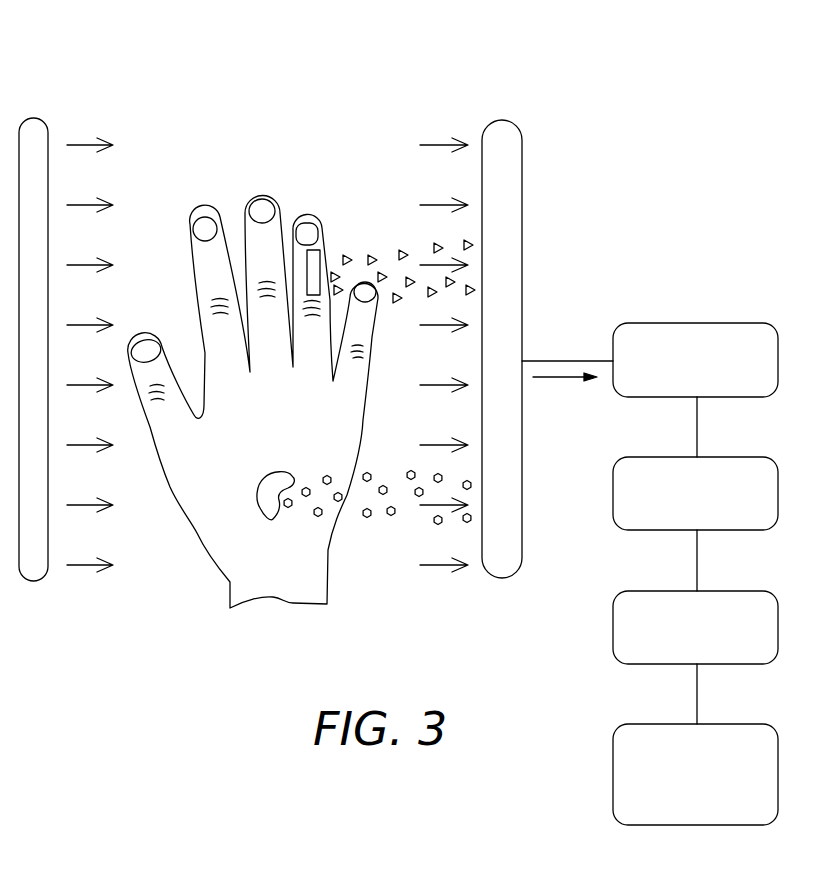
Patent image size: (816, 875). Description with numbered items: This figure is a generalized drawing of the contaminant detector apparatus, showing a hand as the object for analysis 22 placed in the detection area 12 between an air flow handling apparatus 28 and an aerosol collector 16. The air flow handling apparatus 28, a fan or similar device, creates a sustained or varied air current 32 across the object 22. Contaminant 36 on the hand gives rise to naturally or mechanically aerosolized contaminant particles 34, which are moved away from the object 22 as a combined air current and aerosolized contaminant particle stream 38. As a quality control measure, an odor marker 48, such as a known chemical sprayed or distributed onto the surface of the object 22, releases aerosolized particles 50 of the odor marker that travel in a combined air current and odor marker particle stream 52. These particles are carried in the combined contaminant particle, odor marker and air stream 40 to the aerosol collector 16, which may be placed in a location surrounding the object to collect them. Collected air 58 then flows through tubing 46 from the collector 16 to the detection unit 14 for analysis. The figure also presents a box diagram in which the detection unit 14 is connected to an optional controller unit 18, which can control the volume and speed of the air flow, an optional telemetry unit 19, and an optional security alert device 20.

The detection area 12 is at (295, 95).
The detection unit 14 is at (727, 323).
The aerosol collector 16 is at (500, 119).
The controller unit 18 is at (727, 457).
The telemetry unit 19 is at (727, 591).
The security alert device 20 is at (727, 724).
The object for analysis 22 is at (245, 606).
The air flow handling apparatus 28 is at (35, 118).
The air current 32 is at (83, 145).
The aerosolized contaminant particles 34 is at (368, 518).
The contaminant 36 is at (270, 518).
The combined air current/aerosolized contaminant particles 38 is at (393, 458).
The combined air flow/contaminant particle stream 40 is at (432, 145).
The tubing 46 is at (538, 360).
The odor marker 48 is at (320, 252).
The aerosolized particles of odor marker 50 is at (397, 304).
The air current/aerosolized odor marker particles 52 is at (409, 240).
The collected air 58 is at (547, 378).